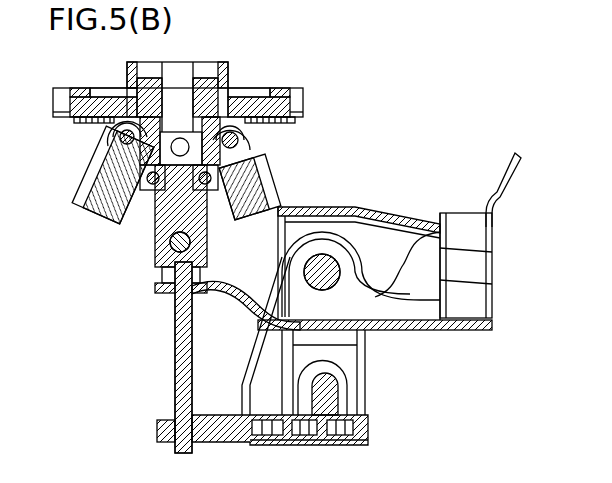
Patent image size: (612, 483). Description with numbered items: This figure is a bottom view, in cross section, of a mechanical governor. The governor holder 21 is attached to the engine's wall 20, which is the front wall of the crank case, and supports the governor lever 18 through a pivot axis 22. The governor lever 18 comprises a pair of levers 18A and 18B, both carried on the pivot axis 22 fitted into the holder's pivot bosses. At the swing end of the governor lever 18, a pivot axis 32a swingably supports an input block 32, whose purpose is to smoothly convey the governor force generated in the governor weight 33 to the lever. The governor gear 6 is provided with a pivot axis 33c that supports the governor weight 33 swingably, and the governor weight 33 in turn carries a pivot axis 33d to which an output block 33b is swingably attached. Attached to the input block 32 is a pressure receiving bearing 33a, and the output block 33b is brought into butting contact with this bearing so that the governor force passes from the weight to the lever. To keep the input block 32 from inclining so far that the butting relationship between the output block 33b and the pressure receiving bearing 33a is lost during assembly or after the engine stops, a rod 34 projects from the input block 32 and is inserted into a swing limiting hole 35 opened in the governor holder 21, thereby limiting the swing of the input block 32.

The governor gear 6 is at (80, 104).
The governor lever 18 is at (560, 240).
The lever 18A is at (492, 252).
The lever 18B is at (492, 284).
The engine's wall 20 is at (192, 82).
The governor holder 21 is at (372, 428).
The pivot axis 22 is at (328, 280).
The input block 32 is at (172, 210).
The pivot axis 32a is at (163, 252).
The governor weight 33 is at (250, 190).
The pressure receiving bearing 33a is at (243, 154).
The output block 33b is at (100, 164).
The pivot axis 33c is at (231, 146).
The pivot axis 33d is at (178, 82).
The rod 34 is at (180, 335).
The swing limiting hole 35 is at (173, 415).